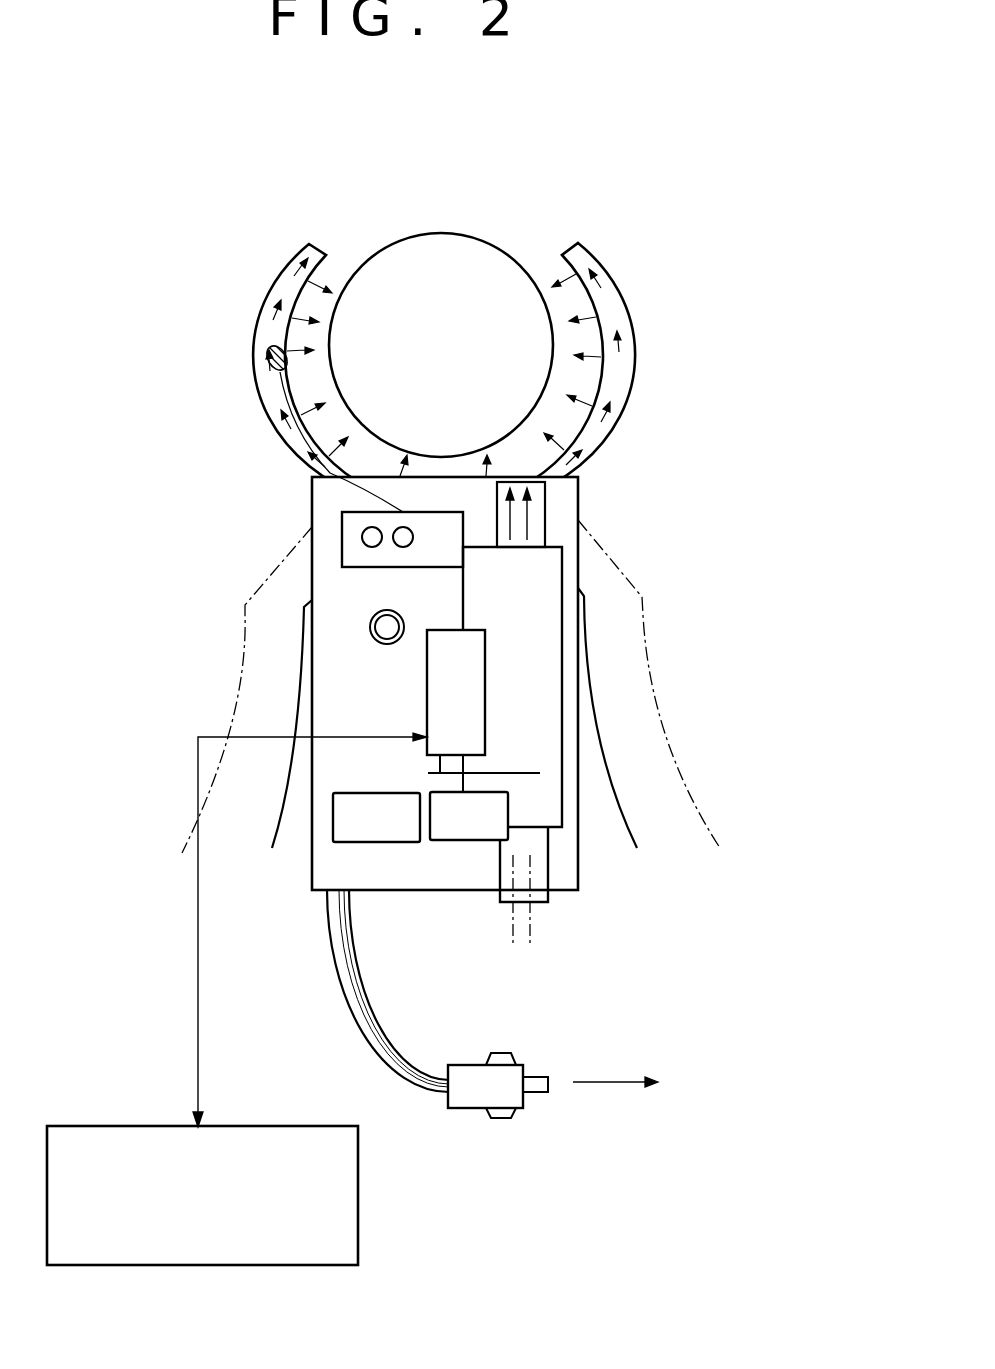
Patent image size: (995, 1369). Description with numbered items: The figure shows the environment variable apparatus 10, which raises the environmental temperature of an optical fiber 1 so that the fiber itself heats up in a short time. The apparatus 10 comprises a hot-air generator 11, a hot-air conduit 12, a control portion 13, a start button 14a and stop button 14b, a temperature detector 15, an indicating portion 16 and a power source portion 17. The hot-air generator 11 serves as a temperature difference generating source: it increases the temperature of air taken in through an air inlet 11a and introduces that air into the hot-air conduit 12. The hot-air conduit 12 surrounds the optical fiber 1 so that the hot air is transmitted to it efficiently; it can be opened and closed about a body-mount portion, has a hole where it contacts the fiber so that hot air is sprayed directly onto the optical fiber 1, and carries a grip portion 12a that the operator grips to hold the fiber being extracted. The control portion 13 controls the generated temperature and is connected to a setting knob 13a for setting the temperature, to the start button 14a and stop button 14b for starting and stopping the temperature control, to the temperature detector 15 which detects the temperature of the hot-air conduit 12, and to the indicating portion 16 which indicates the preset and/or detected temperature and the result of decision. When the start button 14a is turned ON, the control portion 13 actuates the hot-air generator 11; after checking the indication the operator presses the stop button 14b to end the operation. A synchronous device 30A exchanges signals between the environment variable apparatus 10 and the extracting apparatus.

The optical fiber 1 is at (463, 234).
The environment variable apparatus 10 is at (620, 880).
The hot-air generator 11 is at (543, 577).
The air inlet 11a is at (532, 918).
The hot-air conduit 12 is at (628, 320).
The grip portion 12a is at (240, 813).
The control portion 13 is at (427, 690).
The setting knob 13a is at (370, 628).
The start button 14a is at (380, 842).
The stop button 14b is at (457, 842).
The temperature detector 15 is at (268, 350).
The indicating portion 16 is at (343, 528).
The power source portion 17 is at (473, 1092).
The synchronous device 30A is at (295, 1125).